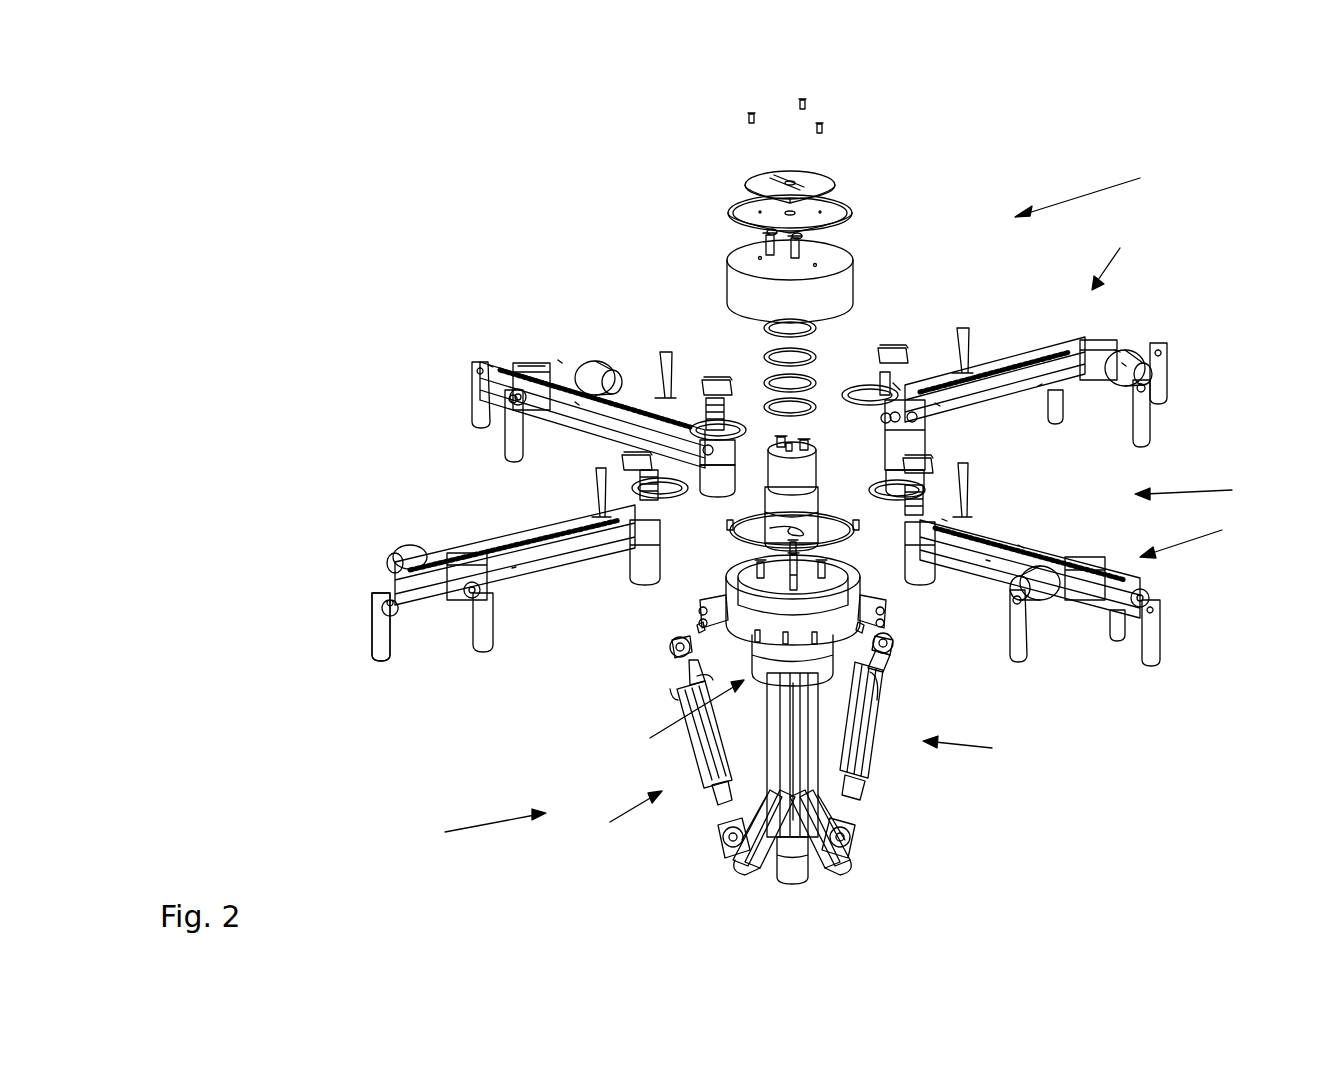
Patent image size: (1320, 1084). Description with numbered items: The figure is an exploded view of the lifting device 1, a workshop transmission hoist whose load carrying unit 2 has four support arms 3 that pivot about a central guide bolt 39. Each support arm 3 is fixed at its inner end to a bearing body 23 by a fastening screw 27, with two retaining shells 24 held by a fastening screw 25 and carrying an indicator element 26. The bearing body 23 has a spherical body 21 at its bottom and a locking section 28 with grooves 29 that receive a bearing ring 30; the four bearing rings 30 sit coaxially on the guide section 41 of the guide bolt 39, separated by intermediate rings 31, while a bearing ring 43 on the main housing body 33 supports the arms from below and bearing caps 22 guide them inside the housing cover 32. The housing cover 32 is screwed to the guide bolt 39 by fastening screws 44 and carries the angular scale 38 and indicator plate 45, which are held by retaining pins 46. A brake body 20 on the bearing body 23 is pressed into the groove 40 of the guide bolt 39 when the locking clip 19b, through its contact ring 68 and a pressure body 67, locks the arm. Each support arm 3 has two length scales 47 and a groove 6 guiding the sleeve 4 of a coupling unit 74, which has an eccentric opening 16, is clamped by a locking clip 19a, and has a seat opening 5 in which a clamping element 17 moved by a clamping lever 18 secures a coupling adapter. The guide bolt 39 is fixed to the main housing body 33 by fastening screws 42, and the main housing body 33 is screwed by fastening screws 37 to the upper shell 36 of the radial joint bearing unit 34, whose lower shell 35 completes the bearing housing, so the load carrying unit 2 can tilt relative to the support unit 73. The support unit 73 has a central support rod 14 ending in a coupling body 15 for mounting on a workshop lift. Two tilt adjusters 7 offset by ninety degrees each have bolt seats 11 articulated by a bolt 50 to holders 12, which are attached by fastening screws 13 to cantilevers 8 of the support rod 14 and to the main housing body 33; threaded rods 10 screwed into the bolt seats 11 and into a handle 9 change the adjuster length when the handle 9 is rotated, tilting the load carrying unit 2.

The lifting device 1 is at (1088, 184).
The load carrying unit 2 is at (1194, 488).
The support arm 3 is at (1015, 385).
The sleeve 4 is at (492, 367).
The seat opening 5 is at (560, 362).
The groove 6 is at (572, 406).
The tilt adjuster 7 is at (802, 787).
The cantilever 8 is at (740, 870).
The handle 9 is at (700, 766).
The threaded rod 10 is at (712, 800).
The bolt seat 11 is at (690, 645).
The holder 12 is at (700, 612).
The fastening screw 13 is at (698, 622).
The support rod 14 is at (769, 720).
The coupling body 15 is at (784, 875).
The opening 16 is at (530, 365).
The clamping element 17 is at (582, 370).
The clamping lever 18 is at (608, 365).
The locking clip 19a is at (505, 445).
The locking clip 19b is at (475, 385).
The brake body 20 is at (885, 438).
The spherical body 21 is at (706, 500).
The bearing cap 22 is at (630, 458).
The bearing body 23 is at (712, 480).
The retaining shell 24 is at (938, 405).
The fastening screw 25 is at (717, 378).
The indicator element 26 is at (662, 375).
The fastening screw 27 is at (878, 420).
The locking section 28 is at (878, 382).
The groove 29 is at (895, 385).
The bearing ring 30 is at (735, 428).
The intermediate ring 31 is at (806, 326).
The housing cover 32 is at (836, 258).
The main housing body 33 is at (776, 618).
The radial joint bearing unit 34 is at (679, 715).
The lower shell 35 is at (860, 700).
The upper shell 36 is at (795, 690).
The fastening screw 37 is at (752, 570).
The angular scale 38 is at (832, 209).
The guide bolt 39 is at (790, 500).
The groove 40 is at (800, 520).
The guide section 41 is at (805, 470).
The fastening screw 42 is at (800, 420).
The bearing ring 43 is at (732, 538).
The fastening screw 44 is at (764, 242).
The indicator plate 45 is at (762, 180).
The retaining pin 46 is at (800, 104).
The length scale 47 is at (1022, 548).
The bolt 50 is at (680, 660).
The pressure body 67 is at (1150, 590).
The contact ring 68 is at (405, 605).
The support unit 73 is at (475, 830).
The coupling unit 74 is at (1172, 388).